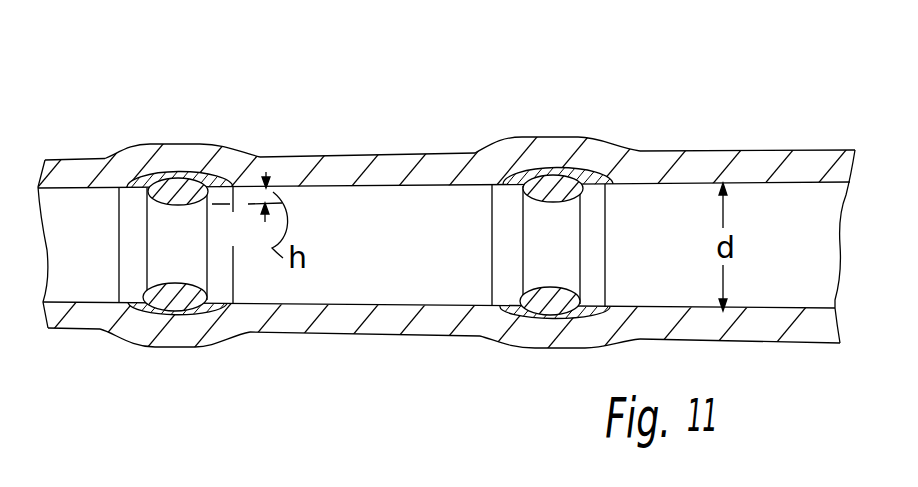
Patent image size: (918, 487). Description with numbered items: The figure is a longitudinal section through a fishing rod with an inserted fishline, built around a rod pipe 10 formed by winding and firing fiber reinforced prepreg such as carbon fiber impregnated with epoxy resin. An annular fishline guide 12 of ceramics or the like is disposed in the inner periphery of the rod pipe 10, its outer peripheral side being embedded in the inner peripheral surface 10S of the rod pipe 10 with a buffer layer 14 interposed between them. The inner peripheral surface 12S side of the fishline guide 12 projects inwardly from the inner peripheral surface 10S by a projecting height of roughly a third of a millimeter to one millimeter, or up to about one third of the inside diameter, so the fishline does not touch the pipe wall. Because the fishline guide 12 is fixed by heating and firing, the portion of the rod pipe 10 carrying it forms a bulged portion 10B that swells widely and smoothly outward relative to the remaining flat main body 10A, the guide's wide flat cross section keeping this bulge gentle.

The rod pipe 10 is at (446, 143).
The flat main body 10A is at (352, 163).
The bulged portion 10B is at (188, 153).
The inner peripheral surface 10S is at (315, 188).
The fishline guide 12 is at (190, 199).
The inner peripheral surface 12S is at (173, 207).
The buffer layer 14 is at (143, 183).